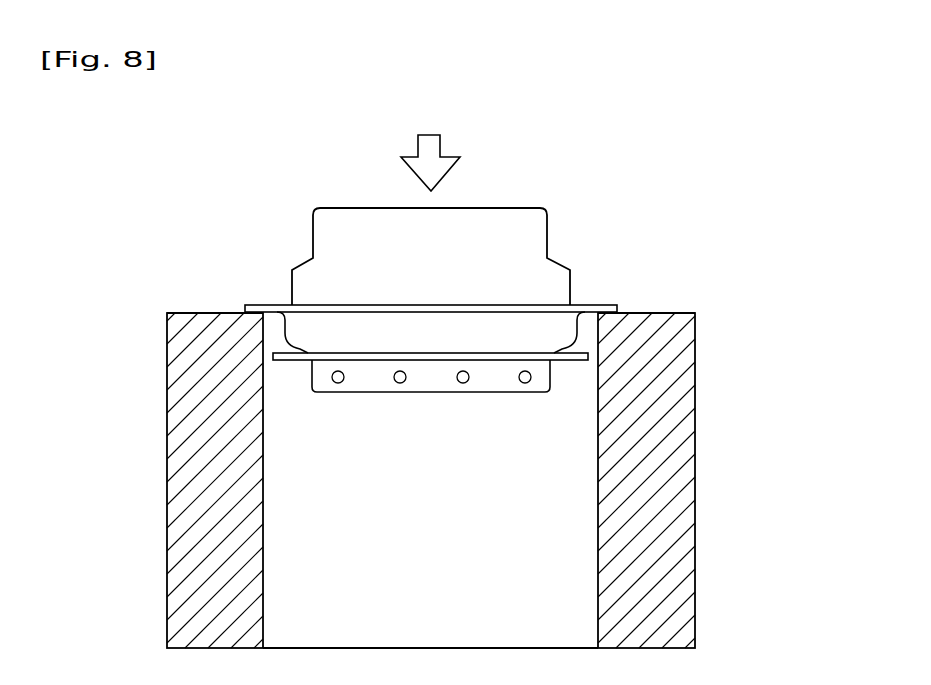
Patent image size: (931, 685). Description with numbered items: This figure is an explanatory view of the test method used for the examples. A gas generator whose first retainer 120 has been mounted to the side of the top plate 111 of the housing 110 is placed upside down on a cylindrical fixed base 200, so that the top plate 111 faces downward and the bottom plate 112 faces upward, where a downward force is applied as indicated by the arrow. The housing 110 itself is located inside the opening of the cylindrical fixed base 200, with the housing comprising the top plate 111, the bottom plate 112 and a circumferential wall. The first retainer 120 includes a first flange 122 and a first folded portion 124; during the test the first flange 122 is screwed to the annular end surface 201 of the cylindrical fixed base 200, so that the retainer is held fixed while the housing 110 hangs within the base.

The housing 110 is at (520, 192).
The bottom plate 112 is at (368, 207).
The first retainer 120 is at (350, 322).
The first flange 122 is at (602, 305).
The first folded portion 124 is at (567, 362).
The top plate 111 is at (373, 394).
The cylindrical fixed base 200 is at (713, 452).
The annular end surface 201 is at (663, 313).